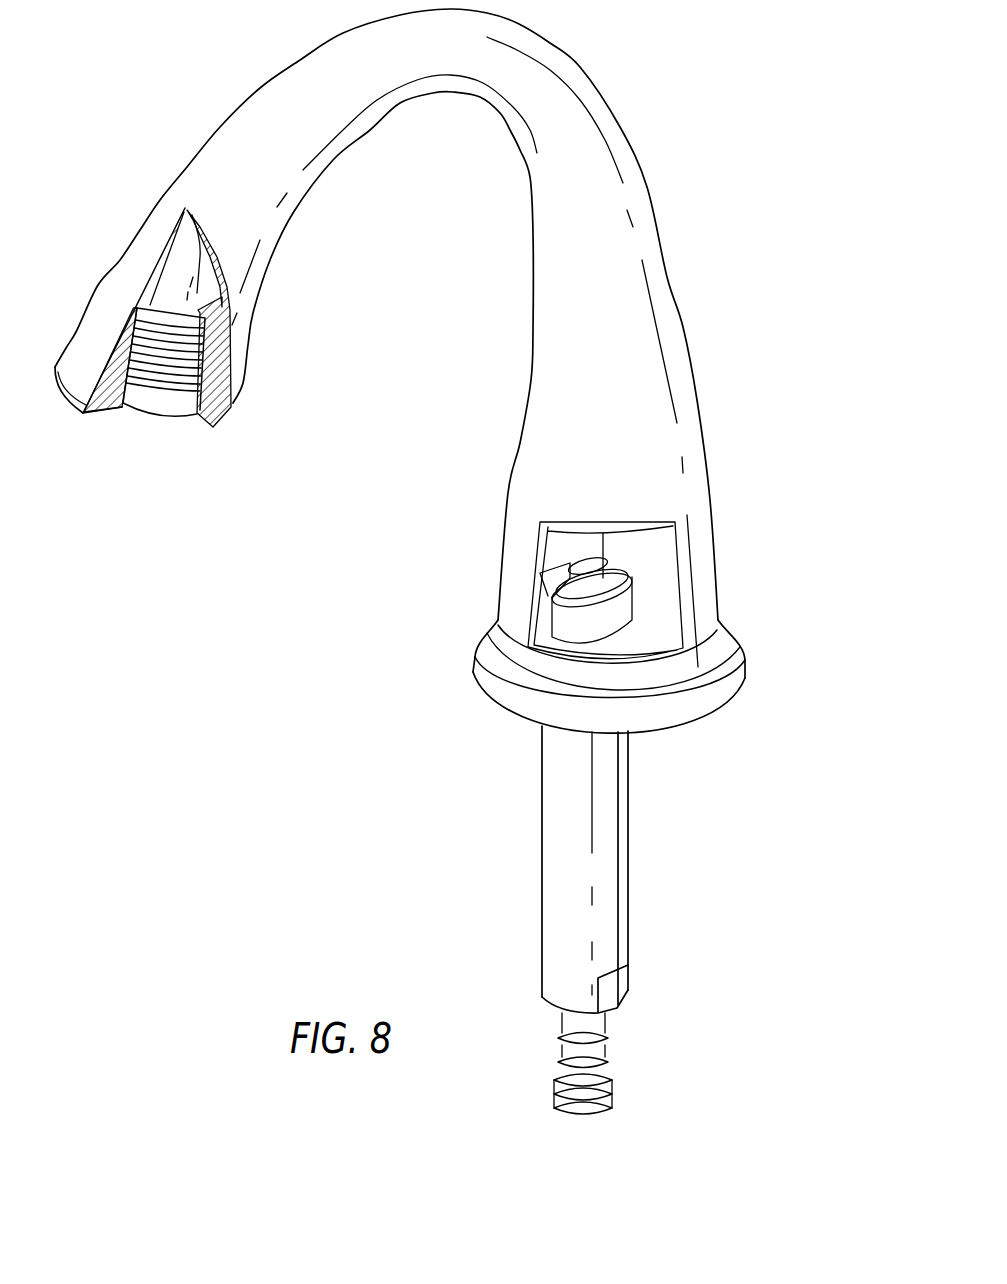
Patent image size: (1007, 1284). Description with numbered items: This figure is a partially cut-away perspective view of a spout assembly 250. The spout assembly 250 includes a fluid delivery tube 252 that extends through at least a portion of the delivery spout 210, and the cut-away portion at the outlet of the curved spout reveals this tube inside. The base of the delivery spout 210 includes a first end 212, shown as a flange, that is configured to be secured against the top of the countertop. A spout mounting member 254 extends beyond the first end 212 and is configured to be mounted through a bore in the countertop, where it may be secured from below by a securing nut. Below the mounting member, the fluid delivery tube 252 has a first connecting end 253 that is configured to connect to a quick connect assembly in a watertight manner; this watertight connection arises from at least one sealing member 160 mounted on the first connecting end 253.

The spout assembly 250 is at (728, 266).
The delivery spout 210 is at (565, 77).
The fluid delivery tube 252 is at (183, 281).
The first end 212 is at (703, 700).
The spout mounting member 254 is at (605, 855).
The sealing member 160 is at (615, 1075).
The first connecting end 253 is at (597, 1118).